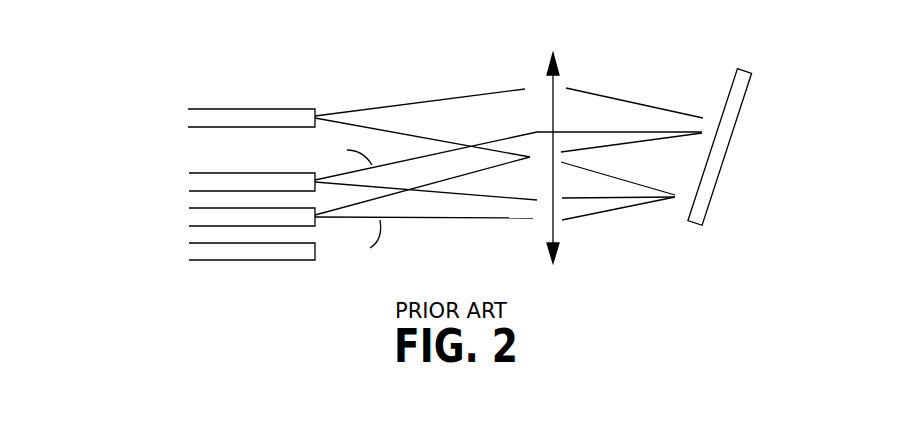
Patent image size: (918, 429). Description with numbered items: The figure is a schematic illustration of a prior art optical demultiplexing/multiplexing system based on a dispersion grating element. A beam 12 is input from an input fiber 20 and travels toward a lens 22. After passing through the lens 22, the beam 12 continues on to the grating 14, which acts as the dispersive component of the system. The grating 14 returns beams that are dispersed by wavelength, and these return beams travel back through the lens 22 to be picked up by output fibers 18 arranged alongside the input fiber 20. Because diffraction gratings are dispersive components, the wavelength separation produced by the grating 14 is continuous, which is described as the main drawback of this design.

The input fiber 20 is at (248, 107).
The output fibers 18 is at (192, 182).
The beam 12 is at (415, 103).
The lens 22 is at (553, 88).
The grating 14 is at (748, 70).